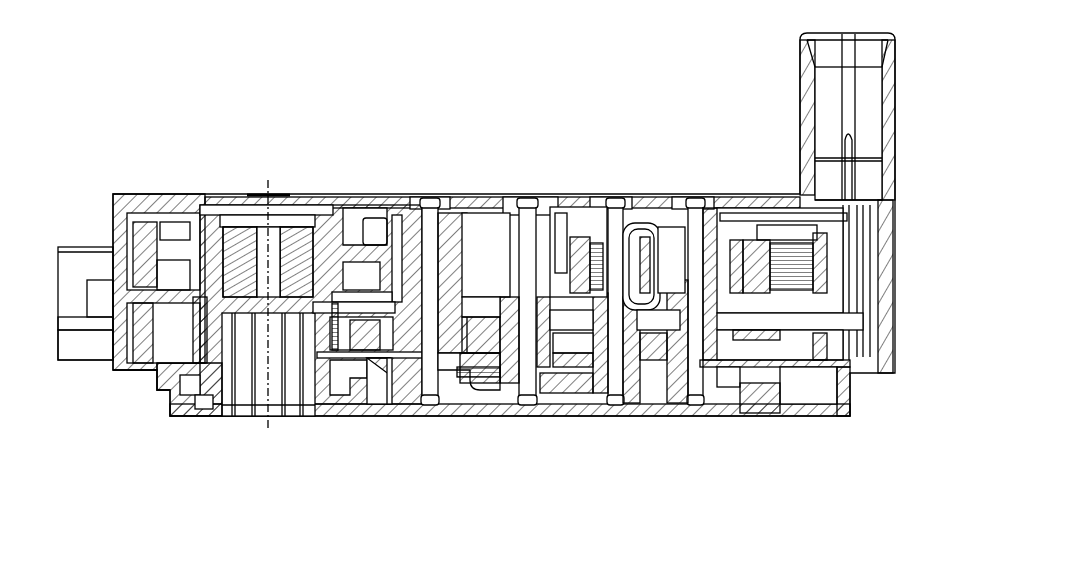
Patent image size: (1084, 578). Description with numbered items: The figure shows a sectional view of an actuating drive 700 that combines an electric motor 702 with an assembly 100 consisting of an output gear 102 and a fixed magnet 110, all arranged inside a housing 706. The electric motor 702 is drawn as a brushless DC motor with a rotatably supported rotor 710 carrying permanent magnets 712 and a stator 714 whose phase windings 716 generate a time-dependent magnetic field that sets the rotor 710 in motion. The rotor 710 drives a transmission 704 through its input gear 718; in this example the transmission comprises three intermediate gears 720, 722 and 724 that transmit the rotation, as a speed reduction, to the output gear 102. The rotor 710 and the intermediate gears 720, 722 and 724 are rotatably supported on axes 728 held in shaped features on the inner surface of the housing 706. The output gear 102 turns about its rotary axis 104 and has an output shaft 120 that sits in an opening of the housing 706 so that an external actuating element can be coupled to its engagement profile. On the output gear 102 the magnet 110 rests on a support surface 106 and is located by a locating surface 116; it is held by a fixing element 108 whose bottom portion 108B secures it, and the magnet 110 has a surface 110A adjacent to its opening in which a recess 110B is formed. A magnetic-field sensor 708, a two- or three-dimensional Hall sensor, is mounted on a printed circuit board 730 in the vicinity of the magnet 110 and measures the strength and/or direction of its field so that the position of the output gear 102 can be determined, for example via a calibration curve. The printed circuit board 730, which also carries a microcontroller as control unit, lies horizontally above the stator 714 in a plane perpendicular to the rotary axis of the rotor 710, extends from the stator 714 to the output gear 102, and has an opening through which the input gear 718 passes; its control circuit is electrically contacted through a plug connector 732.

The actuating drive 700 is at (499, 290).
The assembly 100 is at (257, 297).
The output gear 102 is at (461, 235).
The rotary axis 104 is at (244, 334).
The support surface 106 is at (268, 356).
The fixing element 108 is at (268, 215).
The bottom portion of fixing element 108B is at (256, 175).
The magnet 110 is at (363, 216).
The surface adjacent to opening 110A is at (272, 173).
The recess in surface 110B is at (304, 280).
The locating surface 116 is at (166, 231).
The output shaft 120 is at (189, 420).
The electric motor 702 is at (502, 149).
The transmission 704 is at (510, 451).
The housing 706 is at (814, 414).
The magnetic-field sensor 708 is at (131, 413).
The rotor 710 is at (702, 254).
The permanent magnets 712 is at (831, 231).
The stator 714 is at (857, 266).
The phase windings 716 is at (822, 331).
The input gear 718 is at (757, 418).
The intermediate gear 720 is at (619, 343).
The intermediate gear 722 is at (534, 378).
The intermediate gear 724 is at (463, 380).
The axes 728 is at (562, 277).
The printed circuit board 730 is at (493, 271).
The plug connector 732 is at (878, 135).